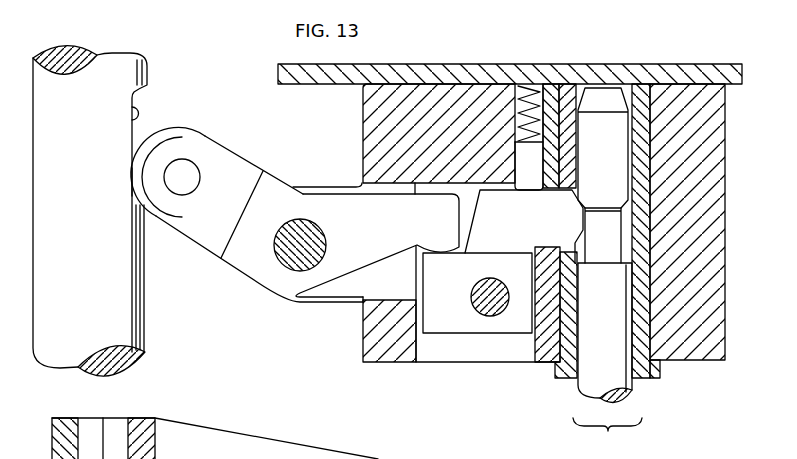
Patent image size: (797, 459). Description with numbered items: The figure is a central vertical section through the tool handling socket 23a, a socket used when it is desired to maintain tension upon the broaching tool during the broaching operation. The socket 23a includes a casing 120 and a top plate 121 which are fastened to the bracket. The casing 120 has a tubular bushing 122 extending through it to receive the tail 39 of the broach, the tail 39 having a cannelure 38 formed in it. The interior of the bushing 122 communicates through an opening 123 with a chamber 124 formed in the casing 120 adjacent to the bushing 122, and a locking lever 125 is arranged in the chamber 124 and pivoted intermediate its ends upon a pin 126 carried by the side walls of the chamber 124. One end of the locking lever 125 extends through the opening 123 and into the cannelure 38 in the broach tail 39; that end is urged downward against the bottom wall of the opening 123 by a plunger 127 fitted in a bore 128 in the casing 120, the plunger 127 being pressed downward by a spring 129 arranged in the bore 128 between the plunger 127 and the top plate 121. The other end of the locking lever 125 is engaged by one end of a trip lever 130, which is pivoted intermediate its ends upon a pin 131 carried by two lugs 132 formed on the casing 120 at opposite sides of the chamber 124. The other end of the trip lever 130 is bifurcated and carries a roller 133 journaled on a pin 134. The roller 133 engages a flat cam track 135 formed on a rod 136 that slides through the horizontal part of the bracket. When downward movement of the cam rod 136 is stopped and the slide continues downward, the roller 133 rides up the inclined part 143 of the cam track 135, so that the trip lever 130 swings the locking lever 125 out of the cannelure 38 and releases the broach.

The casing 120 is at (677, 346).
The top plate 121 is at (683, 63).
The tubular bushing 122 is at (647, 372).
The opening 123 is at (568, 193).
The chamber 124 is at (472, 345).
The locking lever 125 is at (503, 323).
The pin 126 is at (488, 287).
The plunger 127 is at (530, 192).
The bore 128 is at (523, 167).
The spring 129 is at (515, 112).
The trip lever 130 is at (402, 232).
The pin 131 is at (293, 253).
The lugs 132 is at (352, 311).
The roller 133 is at (198, 135).
The pin 134 is at (190, 173).
The flat cam track 135 is at (131, 111).
The rod 136 is at (108, 297).
The inclined part 143 is at (133, 212).
The cannelure 38 is at (618, 250).
The tail 39 is at (620, 353).
The socket 23a is at (607, 437).